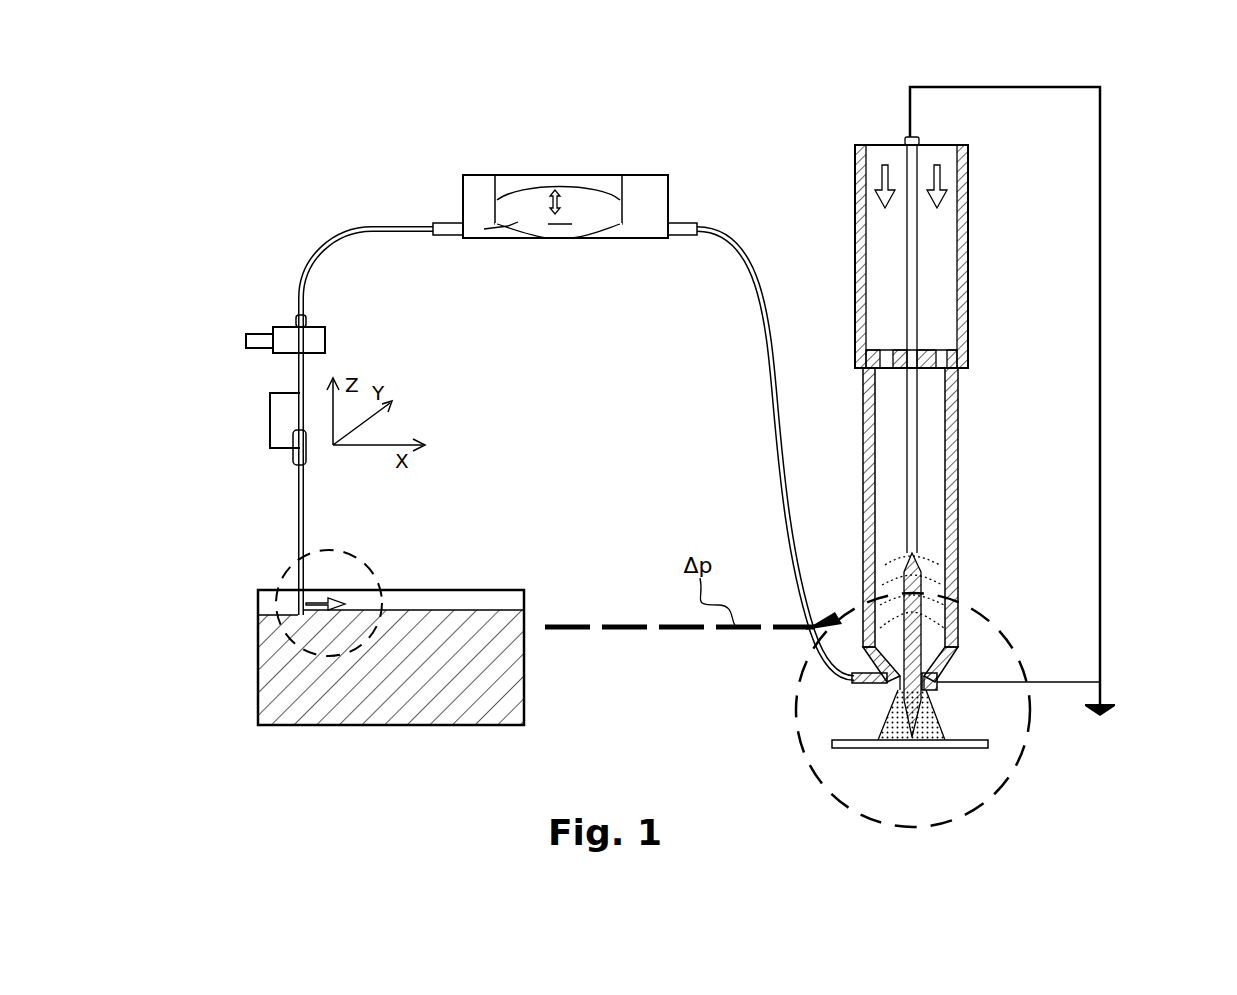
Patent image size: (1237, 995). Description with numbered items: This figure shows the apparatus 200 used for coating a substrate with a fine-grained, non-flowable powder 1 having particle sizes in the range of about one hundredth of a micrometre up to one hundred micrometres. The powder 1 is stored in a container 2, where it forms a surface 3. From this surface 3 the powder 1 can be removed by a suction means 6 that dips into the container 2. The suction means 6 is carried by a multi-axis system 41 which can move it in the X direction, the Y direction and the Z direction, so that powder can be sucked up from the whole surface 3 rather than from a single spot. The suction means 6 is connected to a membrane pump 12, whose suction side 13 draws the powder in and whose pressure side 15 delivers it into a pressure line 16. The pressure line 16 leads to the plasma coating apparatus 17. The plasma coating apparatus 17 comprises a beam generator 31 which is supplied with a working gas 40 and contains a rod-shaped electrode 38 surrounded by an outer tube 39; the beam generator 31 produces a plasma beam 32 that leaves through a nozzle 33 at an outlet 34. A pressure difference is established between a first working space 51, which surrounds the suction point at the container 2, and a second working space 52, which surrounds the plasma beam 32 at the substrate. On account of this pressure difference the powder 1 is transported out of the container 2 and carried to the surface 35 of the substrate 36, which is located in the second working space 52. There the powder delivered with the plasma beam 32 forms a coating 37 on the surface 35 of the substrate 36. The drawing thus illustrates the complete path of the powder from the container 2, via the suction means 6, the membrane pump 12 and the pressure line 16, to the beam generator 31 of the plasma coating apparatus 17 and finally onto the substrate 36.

The powder 1 is at (424, 650).
The container 2 is at (512, 710).
The surface of the powder 3 is at (487, 596).
The suction means 6 is at (300, 525).
The membrane pump 12 is at (570, 232).
The suction side 13 is at (447, 232).
The pressure side 15 is at (683, 232).
The pressure line 16 is at (772, 385).
The plasma coating apparatus 17 is at (1140, 423).
The beam generator 31 is at (933, 466).
The plasma beam 32 is at (920, 600).
The nozzle 33 is at (887, 690).
The outlet 34 is at (937, 698).
The surface 35 is at (974, 745).
The substrate 36 is at (860, 745).
The coating 37 is at (916, 745).
The rod-shaped electrode 38 is at (912, 437).
The outer tube 39 is at (955, 515).
The working gas 40 is at (938, 178).
The multi-axis system 41 is at (300, 410).
The first working space 51 is at (353, 553).
The second working space 52 is at (1030, 722).
The apparatus for use 200 is at (672, 495).